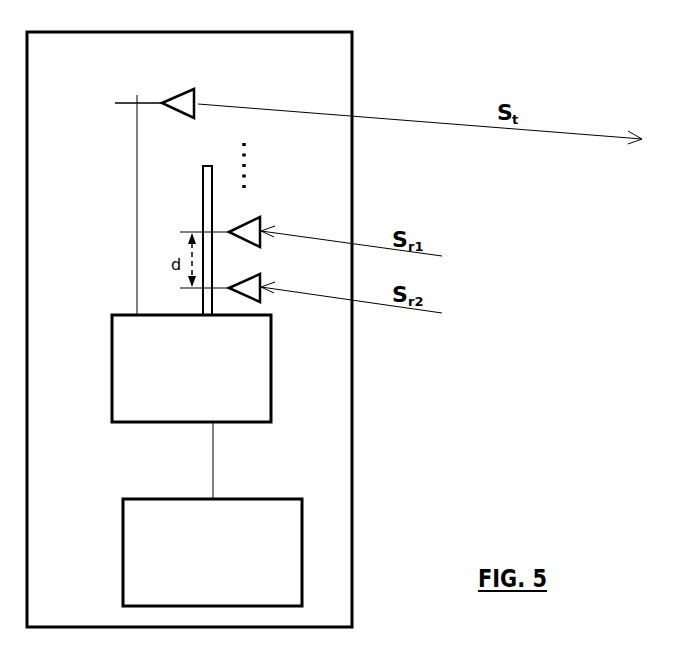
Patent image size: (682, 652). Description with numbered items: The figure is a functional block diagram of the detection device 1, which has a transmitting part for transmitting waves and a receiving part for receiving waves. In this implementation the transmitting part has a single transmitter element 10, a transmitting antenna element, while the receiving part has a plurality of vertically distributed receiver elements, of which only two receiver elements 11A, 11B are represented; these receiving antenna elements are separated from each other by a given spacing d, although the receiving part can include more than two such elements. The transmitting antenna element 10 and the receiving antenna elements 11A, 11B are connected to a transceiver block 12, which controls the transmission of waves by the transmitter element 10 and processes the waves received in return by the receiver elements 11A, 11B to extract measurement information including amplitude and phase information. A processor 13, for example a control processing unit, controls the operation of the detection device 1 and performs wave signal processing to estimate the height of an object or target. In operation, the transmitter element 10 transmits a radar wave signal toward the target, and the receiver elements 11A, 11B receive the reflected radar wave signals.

The detection device 1 is at (352, 452).
The transmitter element 10 is at (128, 101).
The receiver element 11A is at (220, 282).
The receiver element 11B is at (220, 223).
The transceiver block 12 is at (178, 372).
The processor 13 is at (199, 557).